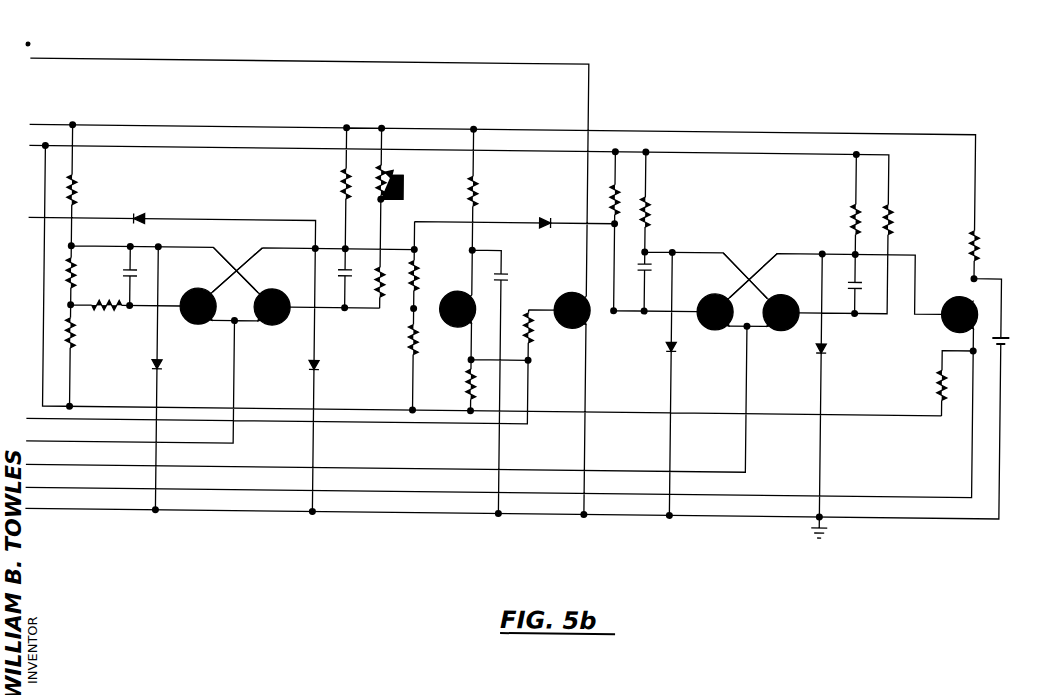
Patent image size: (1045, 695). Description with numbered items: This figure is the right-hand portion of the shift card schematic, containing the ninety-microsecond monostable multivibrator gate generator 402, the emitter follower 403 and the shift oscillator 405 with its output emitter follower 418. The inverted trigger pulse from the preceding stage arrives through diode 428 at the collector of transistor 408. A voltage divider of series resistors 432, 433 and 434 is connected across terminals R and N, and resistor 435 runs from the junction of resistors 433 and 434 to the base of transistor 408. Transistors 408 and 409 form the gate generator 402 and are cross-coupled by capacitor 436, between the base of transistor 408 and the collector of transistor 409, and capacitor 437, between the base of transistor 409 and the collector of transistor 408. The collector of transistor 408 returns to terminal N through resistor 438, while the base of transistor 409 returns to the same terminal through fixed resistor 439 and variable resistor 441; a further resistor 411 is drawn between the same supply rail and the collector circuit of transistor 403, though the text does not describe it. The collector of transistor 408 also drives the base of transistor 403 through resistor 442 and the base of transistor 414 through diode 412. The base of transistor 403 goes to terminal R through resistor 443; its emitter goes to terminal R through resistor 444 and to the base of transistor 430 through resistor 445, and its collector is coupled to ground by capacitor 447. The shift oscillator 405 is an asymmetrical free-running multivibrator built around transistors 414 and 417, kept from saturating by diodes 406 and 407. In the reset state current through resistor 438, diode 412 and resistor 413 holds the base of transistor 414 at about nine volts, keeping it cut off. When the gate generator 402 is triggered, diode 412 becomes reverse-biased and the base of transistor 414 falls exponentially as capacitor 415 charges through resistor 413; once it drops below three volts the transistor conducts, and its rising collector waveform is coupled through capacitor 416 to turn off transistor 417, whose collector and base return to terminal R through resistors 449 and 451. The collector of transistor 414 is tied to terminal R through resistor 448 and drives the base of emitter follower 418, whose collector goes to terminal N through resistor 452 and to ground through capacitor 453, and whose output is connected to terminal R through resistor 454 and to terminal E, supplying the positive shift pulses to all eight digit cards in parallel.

The monostable multivibrator gate generator 402 is at (247, 249).
The emitter follower transistor 403 is at (448, 320).
The shift oscillator 405 is at (758, 249).
The diode 406 is at (681, 343).
The diode 407 is at (833, 339).
The transistor 408 is at (196, 323).
The transistor 409 is at (284, 323).
The resistor 411 is at (478, 171).
The diode 412 is at (548, 213).
The resistor 413 is at (624, 189).
The transistor 414 is at (712, 322).
The capacitor 415 is at (658, 263).
The capacitor 416 is at (851, 273).
The transistor 417 is at (799, 321).
The emitter follower transistor 418 is at (953, 286).
The diode 428 is at (147, 214).
The transistor 430 is at (528, 312).
The resistor 432 is at (78, 179).
The resistor 433 is at (77, 258).
The resistor 434 is at (77, 344).
The resistor 435 is at (115, 309).
The capacitor 436 is at (140, 270).
The capacitor 437 is at (341, 270).
The resistor 438 is at (345, 176).
The fixed resistor 439 is at (387, 281).
The variable resistor 441 is at (392, 167).
The resistor 442 is at (423, 263).
The resistor 443 is at (412, 336).
The resistor 444 is at (472, 375).
The resistor 445 is at (555, 321).
The capacitor 447 is at (512, 271).
The resistor 448 is at (855, 207).
The resistor 449 is at (653, 213).
The resistor 451 is at (894, 211).
The resistor 452 is at (981, 225).
The capacitor 453 is at (1008, 329).
The resistor 454 is at (942, 380).